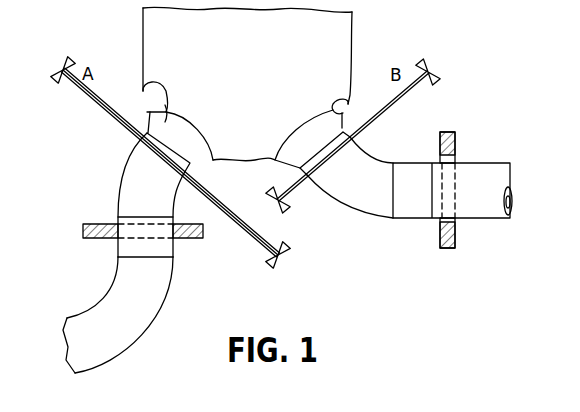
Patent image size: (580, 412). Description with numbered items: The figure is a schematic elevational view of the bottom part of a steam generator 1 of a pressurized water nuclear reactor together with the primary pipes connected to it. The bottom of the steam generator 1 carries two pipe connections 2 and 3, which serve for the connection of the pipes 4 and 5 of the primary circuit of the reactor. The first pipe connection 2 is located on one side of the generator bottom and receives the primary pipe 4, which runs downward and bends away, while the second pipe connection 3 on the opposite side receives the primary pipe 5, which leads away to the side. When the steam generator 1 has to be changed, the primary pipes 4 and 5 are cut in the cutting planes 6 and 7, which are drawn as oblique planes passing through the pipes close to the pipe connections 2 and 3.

The steam generator 1 is at (340, 31).
The pipe connection 2 is at (143, 92).
The pipe connection 3 is at (345, 109).
The primary pipe 4 is at (167, 198).
The primary pipe 5 is at (368, 162).
The cutting plane 6 is at (103, 112).
The cutting plane 7 is at (398, 97).